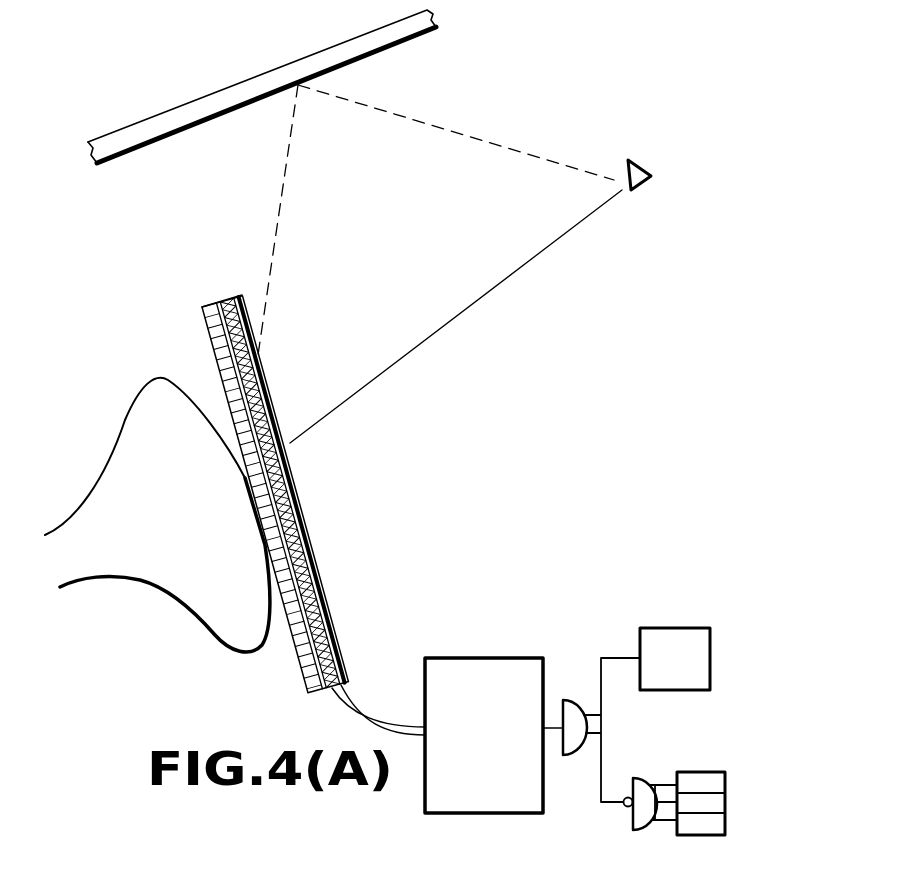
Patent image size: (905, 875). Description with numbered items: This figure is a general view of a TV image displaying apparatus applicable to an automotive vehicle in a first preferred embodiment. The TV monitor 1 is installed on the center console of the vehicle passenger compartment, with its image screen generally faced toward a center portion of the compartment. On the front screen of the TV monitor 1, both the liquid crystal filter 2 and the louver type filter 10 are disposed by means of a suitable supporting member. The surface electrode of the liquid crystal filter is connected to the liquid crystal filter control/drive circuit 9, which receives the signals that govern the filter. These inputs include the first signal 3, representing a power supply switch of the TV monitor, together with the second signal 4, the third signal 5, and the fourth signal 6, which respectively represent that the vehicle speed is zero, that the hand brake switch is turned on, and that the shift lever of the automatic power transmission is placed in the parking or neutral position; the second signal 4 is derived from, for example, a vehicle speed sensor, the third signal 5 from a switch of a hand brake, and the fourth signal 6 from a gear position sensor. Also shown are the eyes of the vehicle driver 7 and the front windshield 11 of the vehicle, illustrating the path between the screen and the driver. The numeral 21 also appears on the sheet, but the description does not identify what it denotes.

The TV monitor 1 is at (210, 622).
The liquid crystal filter 2 is at (237, 293).
The first signal 3 is at (601, 657).
The second signal 4 is at (668, 782).
The third signal 5 is at (663, 777).
The fourth signal 6 is at (662, 822).
The eyes of the vehicle driver 7 is at (647, 188).
The liquid crystal filter control/drive circuit 9 is at (484, 815).
The louver type filter 10 is at (203, 305).
The front windshield 11 is at (254, 82).
The liquid crystal cell 21 is at (187, 874).